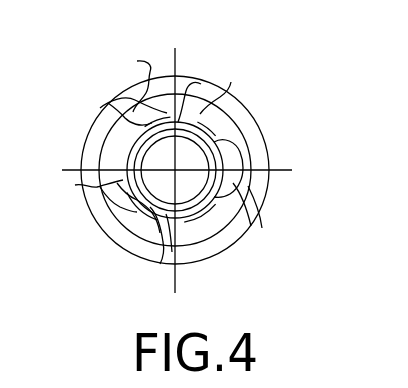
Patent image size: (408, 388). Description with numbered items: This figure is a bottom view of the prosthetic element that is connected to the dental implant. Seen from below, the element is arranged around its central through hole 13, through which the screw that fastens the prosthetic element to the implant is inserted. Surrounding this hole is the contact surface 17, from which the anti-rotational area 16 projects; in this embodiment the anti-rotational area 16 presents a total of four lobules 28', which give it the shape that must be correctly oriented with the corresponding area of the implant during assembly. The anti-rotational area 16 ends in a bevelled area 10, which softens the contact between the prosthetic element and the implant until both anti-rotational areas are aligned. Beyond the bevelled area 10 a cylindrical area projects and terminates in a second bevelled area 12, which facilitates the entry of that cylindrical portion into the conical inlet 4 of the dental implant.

The conical inlet 4 is at (112, 118).
The bevelled area 10 is at (252, 205).
The second bevelled area 12 is at (225, 93).
The central through hole 13 is at (207, 88).
The anti-rotational area 16 is at (234, 176).
The contact surface 17 is at (238, 152).
The lobules 28' is at (102, 170).